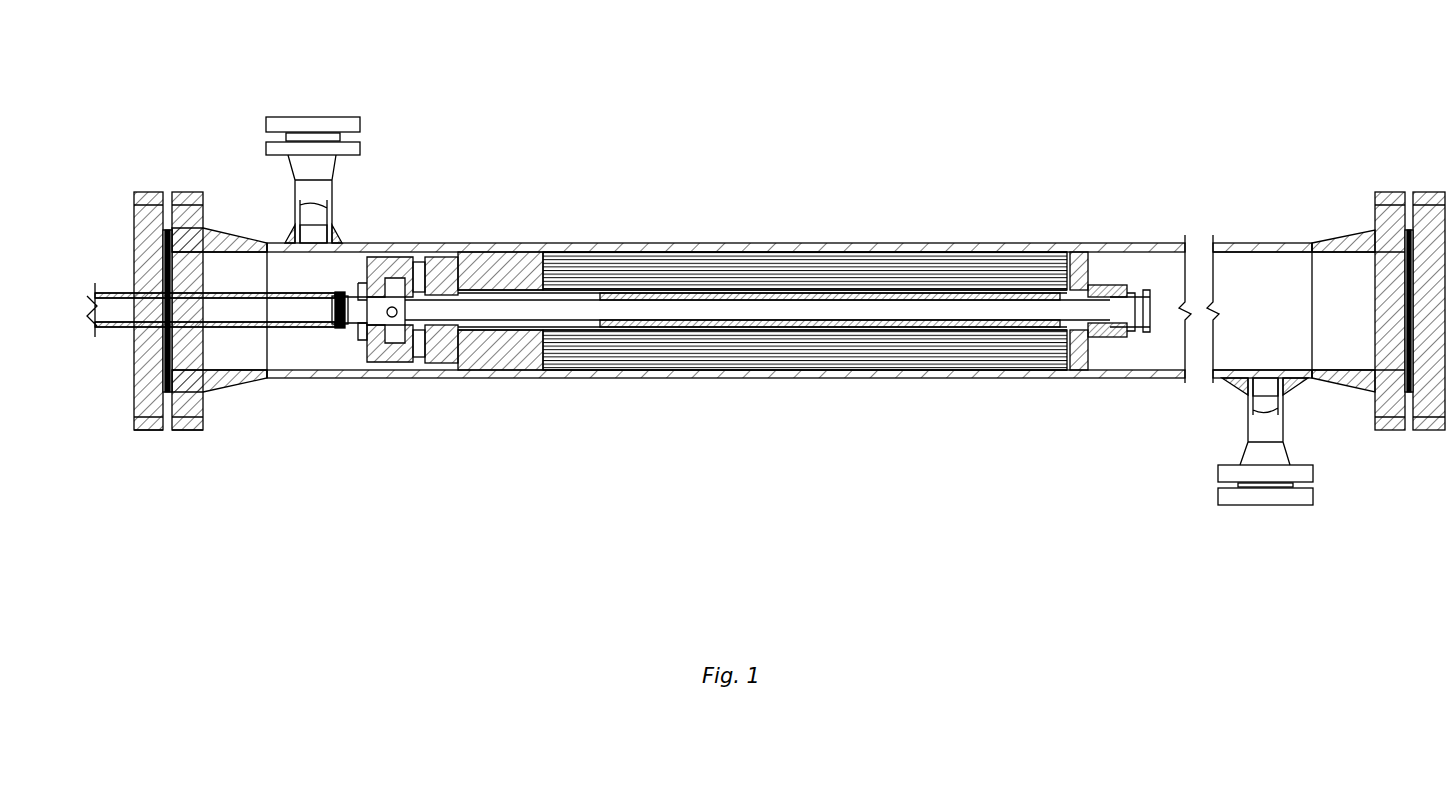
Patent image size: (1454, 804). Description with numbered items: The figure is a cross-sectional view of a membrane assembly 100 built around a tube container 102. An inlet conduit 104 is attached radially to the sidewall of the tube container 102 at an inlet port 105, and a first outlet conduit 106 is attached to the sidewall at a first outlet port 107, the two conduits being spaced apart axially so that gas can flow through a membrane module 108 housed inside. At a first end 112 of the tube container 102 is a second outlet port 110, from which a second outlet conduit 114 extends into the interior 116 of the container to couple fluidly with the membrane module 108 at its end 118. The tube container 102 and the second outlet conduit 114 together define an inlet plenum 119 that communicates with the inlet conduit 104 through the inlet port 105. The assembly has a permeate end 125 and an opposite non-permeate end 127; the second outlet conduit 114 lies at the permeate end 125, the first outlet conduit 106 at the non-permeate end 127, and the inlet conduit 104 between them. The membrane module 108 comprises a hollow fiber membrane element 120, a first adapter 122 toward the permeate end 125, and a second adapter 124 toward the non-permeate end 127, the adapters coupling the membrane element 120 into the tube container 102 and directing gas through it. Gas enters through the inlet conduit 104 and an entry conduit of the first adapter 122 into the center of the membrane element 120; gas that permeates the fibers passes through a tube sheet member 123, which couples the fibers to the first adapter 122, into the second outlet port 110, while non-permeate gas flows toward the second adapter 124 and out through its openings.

The membrane assembly 100 is at (1270, 54).
The tube container 102 is at (1160, 243).
The inlet conduit 104 is at (312, 116).
The inlet port 105 is at (313, 248).
The first outlet conduit 106 is at (1268, 505).
The first outlet port 107 is at (1265, 380).
The membrane module 108 is at (625, 272).
The second outlet port 110 is at (118, 300).
The first end 112 is at (146, 430).
The second outlet conduit 114 is at (205, 294).
The interior 116 is at (237, 361).
The end 118 is at (342, 330).
The inlet plenum 119 is at (212, 252).
The membrane element 120 is at (885, 248).
The first adapter 122 is at (410, 257).
The tube sheet member 123 is at (497, 252).
The second adapter 124 is at (1079, 255).
The permeate end 125 is at (171, 450).
The non-permeate end 127 is at (1333, 208).